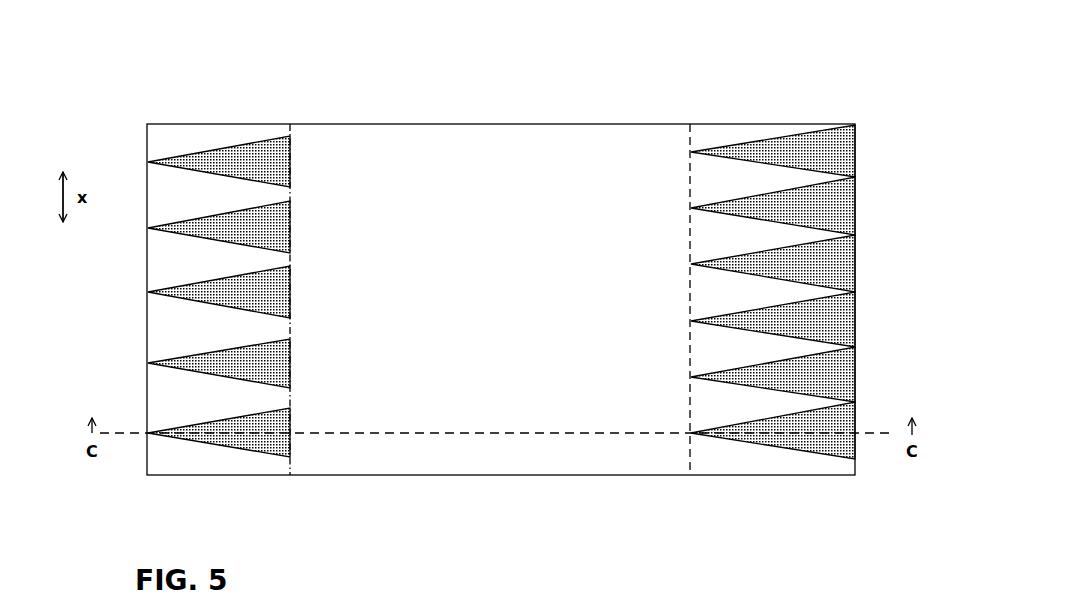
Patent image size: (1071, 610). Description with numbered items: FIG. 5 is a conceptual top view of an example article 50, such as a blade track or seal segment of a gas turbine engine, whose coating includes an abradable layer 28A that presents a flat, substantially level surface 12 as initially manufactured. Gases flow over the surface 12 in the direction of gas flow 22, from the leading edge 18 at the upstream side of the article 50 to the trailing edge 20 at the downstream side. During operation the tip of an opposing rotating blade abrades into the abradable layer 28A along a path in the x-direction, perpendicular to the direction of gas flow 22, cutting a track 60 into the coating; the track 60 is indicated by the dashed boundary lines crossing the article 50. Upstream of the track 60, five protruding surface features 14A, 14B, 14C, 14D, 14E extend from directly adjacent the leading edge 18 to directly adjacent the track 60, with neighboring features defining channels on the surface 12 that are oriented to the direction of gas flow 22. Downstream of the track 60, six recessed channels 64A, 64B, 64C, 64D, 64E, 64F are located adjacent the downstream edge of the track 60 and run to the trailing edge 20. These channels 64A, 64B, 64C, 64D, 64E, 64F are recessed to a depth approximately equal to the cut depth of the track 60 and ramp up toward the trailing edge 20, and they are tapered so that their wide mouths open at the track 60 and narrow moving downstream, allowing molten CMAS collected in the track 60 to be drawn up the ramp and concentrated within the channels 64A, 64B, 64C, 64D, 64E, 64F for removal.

The article 50 is at (676, 51).
The surface 12 is at (219, 336).
The protruding surface feature 14A is at (282, 173).
The protruding surface feature 14B is at (282, 238).
The protruding surface feature 14C is at (282, 303).
The protruding surface feature 14D is at (282, 373).
The protruding surface feature 14E is at (282, 443).
The leading edge 18 is at (123, 92).
The trailing edge 20 is at (880, 92).
The direction of gas flow 22 is at (506, 98).
The abradable layer 28A is at (511, 308).
The track 60 is at (323, 90).
The recessed channel 64A is at (842, 160).
The recessed channel 64B is at (842, 216).
The recessed channel 64C is at (842, 271).
The recessed channel 64D is at (842, 328).
The recessed channel 64E is at (842, 383).
The recessed channel 64F is at (842, 439).